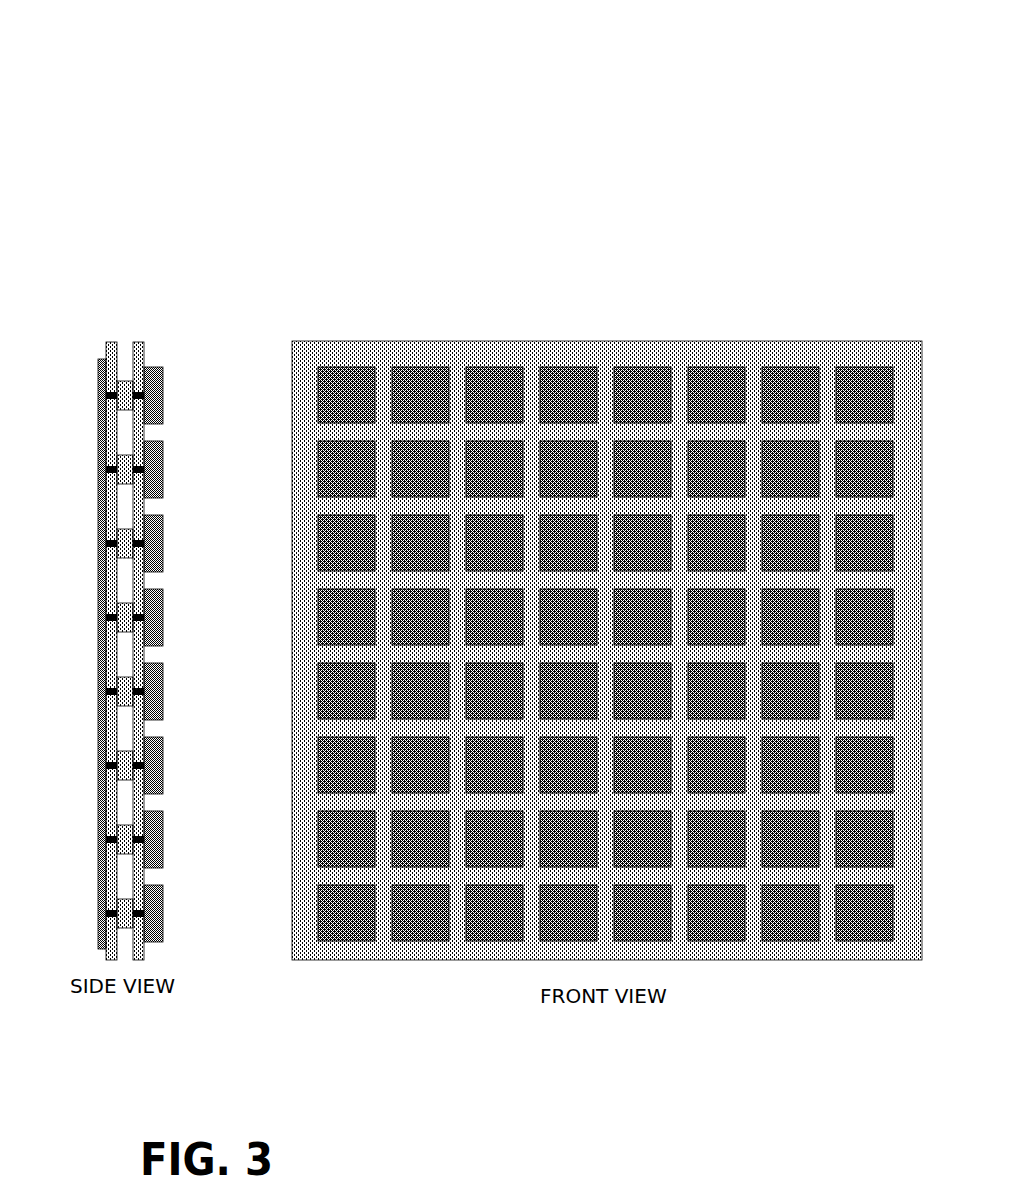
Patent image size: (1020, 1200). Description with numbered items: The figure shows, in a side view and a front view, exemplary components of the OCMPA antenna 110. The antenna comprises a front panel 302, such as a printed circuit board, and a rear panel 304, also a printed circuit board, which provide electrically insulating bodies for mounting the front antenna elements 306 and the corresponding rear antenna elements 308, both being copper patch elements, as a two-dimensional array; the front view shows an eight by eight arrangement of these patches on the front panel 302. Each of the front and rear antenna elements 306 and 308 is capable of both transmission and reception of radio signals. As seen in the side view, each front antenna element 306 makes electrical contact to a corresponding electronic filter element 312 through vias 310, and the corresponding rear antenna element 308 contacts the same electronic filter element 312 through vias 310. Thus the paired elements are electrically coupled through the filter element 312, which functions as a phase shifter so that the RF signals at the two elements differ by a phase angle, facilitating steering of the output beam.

The OCMPA antenna 110 is at (253, 134).
The front panel 302 is at (139, 340).
The rear panel 304 is at (112, 340).
The front antenna elements 306 is at (328, 395).
The rear antenna elements 308 is at (98, 370).
The vias 310 is at (138, 395).
The electronic filter elements 312 is at (125, 460).